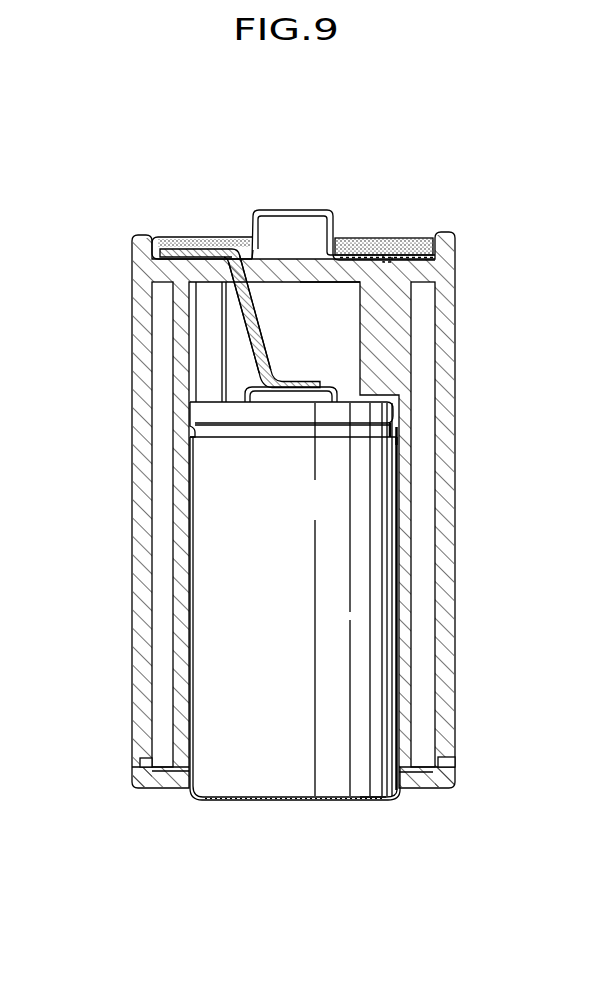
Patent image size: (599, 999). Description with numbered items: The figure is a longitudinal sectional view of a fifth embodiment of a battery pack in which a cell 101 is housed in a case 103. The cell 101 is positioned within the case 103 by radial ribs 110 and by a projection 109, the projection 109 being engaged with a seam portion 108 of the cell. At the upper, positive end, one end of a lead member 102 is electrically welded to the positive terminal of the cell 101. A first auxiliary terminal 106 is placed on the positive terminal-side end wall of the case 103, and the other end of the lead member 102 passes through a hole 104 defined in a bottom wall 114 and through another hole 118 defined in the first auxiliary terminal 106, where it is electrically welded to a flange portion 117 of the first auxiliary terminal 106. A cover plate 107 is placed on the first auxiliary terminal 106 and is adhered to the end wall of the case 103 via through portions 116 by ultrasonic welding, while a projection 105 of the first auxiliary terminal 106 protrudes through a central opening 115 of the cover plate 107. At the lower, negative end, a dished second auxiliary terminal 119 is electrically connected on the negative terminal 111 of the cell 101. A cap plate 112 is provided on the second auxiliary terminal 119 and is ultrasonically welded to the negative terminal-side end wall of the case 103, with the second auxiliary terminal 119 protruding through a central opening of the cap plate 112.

The cell 101 is at (380, 625).
The lead member 102 is at (247, 343).
The case 103 is at (445, 332).
The hole 104 is at (150, 266).
The projection 105 is at (330, 214).
The first auxiliary terminal 106 is at (332, 282).
The cover plate 107 is at (418, 238).
The seam portion 108 is at (279, 428).
The projection 109 is at (395, 427).
The radial ribs 110 is at (390, 367).
The negative terminal 111 is at (352, 804).
The cap plate 112 is at (430, 788).
The bottom wall 114 is at (271, 282).
The central opening 115 is at (252, 240).
The through portions 116 is at (455, 248).
The flange portion 117 is at (172, 237).
The hole 118 is at (222, 247).
The second auxiliary terminal 119 is at (373, 804).